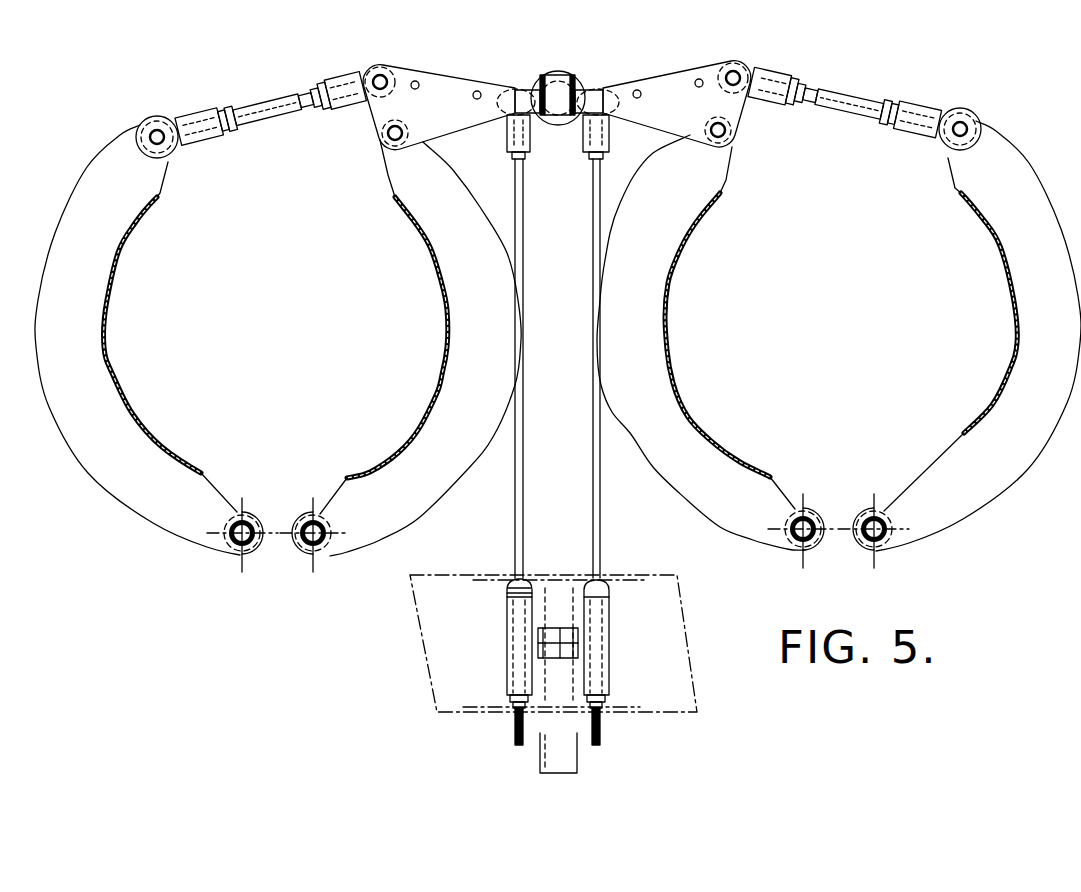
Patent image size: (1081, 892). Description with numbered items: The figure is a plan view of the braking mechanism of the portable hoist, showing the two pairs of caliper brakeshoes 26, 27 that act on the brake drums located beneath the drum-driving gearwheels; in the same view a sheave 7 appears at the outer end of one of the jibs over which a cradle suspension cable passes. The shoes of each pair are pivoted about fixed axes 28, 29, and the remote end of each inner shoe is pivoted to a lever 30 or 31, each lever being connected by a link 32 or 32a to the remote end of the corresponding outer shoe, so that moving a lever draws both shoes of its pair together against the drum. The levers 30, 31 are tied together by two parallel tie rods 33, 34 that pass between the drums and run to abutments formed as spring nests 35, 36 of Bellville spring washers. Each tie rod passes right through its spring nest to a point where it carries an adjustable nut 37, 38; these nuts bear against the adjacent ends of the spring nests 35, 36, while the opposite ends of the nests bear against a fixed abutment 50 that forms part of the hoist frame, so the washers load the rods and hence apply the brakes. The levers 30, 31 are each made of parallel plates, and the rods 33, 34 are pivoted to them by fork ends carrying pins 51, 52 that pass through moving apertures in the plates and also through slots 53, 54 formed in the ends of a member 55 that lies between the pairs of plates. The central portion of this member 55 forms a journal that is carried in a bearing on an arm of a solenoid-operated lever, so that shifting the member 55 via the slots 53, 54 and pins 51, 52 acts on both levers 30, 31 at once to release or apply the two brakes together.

The sheave 7 is at (333, 80).
The caliper brakeshoes 26 is at (82, 330).
The caliper brakeshoes 27 is at (645, 327).
The fixed axis 28 is at (303, 520).
The fixed axis 29 is at (865, 508).
The lever 30 is at (437, 100).
The lever 31 is at (660, 100).
The link 32 is at (257, 105).
The link 32a is at (837, 98).
The tie rod 33 is at (518, 493).
The tie rod 34 is at (600, 497).
The spring nest 35 is at (507, 610).
The spring nest 36 is at (605, 615).
The adjustable nut 37 is at (508, 698).
The adjustable nut 38 is at (613, 697).
The fixed abutment 50 is at (555, 573).
The pin 51 is at (526, 110).
The pin 52 is at (587, 112).
The slot 53 is at (508, 117).
The slot 54 is at (607, 112).
The member 55 is at (559, 103).